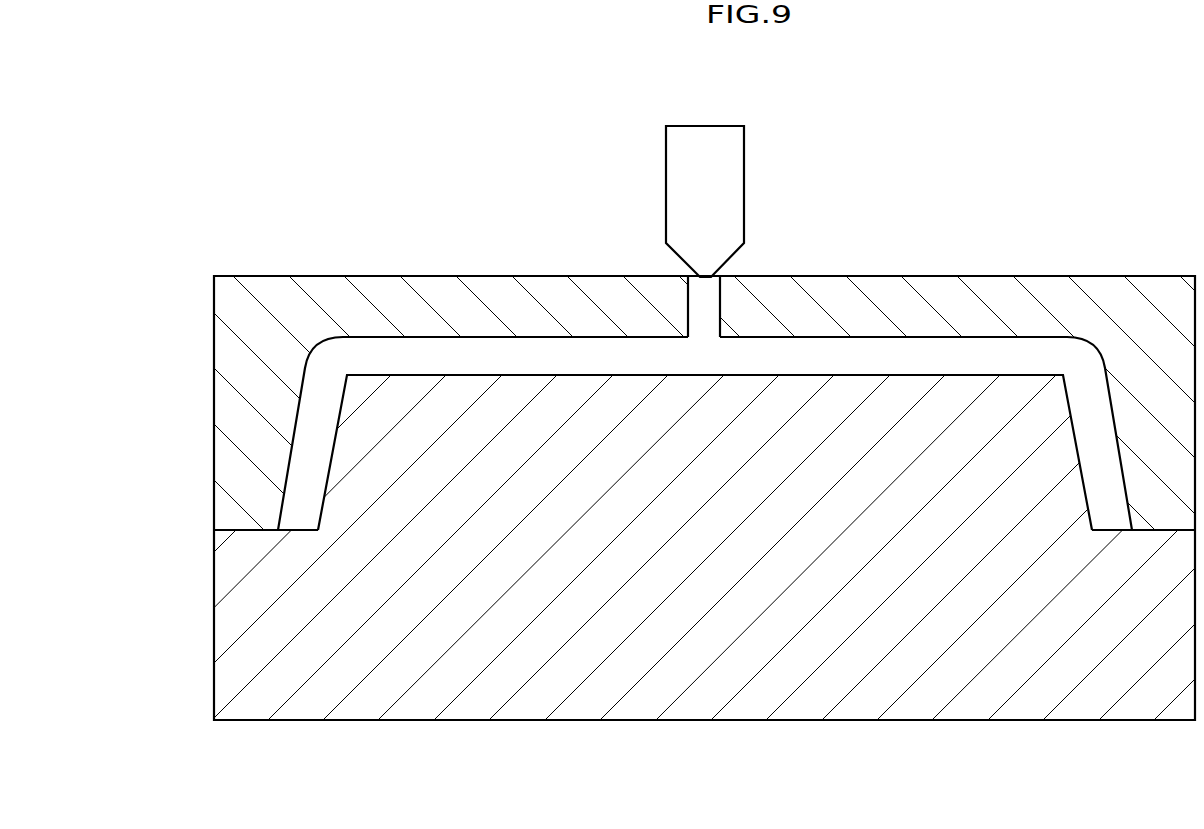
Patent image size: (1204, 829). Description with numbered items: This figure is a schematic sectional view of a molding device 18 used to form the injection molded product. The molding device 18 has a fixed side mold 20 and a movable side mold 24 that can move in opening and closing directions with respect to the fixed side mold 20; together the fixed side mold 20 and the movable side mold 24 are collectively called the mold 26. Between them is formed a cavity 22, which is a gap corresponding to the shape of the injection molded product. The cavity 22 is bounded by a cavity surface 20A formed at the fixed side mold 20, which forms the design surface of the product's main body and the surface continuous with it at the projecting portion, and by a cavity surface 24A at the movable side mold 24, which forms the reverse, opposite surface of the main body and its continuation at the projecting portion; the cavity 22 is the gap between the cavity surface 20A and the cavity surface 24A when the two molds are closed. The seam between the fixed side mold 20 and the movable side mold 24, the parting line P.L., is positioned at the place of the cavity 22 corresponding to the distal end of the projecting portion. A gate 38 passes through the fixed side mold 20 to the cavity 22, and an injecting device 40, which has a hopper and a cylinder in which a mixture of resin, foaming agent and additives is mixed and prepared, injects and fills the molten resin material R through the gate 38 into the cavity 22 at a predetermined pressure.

The molding device 18 is at (602, 474).
The fixed side mold 20 is at (607, 365).
The cavity surface 20A is at (540, 345).
The cavity 22 is at (848, 357).
The movable side mold 24 is at (602, 580).
The cavity surface 24A is at (628, 374).
The mold 26 is at (602, 502).
The gate 38 is at (720, 290).
The injecting device 40 is at (745, 141).
The resin material R is at (986, 358).
The parting line P.L. is at (231, 530).